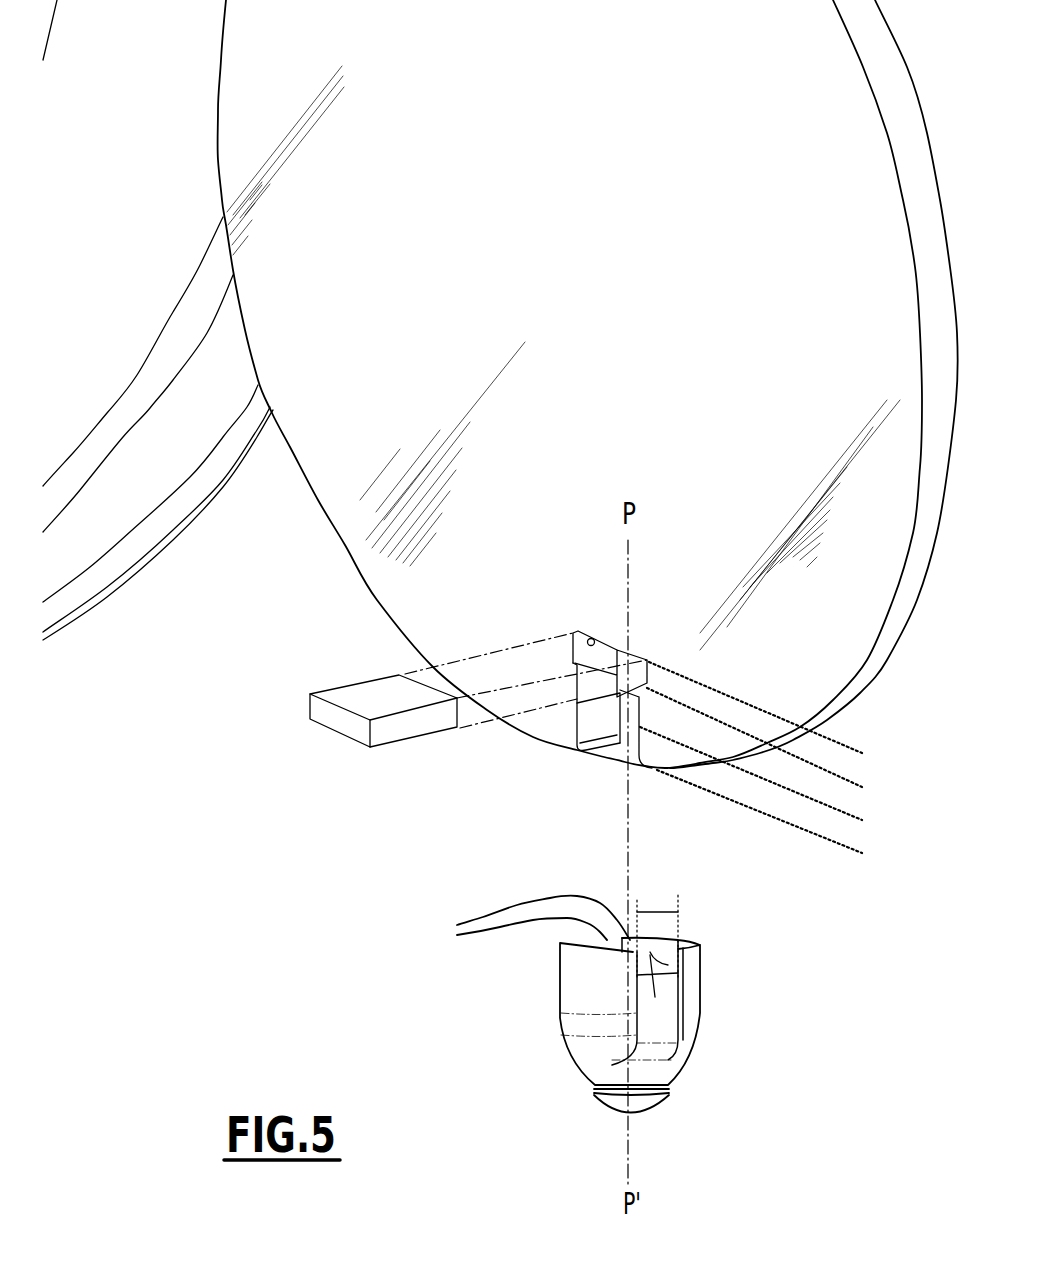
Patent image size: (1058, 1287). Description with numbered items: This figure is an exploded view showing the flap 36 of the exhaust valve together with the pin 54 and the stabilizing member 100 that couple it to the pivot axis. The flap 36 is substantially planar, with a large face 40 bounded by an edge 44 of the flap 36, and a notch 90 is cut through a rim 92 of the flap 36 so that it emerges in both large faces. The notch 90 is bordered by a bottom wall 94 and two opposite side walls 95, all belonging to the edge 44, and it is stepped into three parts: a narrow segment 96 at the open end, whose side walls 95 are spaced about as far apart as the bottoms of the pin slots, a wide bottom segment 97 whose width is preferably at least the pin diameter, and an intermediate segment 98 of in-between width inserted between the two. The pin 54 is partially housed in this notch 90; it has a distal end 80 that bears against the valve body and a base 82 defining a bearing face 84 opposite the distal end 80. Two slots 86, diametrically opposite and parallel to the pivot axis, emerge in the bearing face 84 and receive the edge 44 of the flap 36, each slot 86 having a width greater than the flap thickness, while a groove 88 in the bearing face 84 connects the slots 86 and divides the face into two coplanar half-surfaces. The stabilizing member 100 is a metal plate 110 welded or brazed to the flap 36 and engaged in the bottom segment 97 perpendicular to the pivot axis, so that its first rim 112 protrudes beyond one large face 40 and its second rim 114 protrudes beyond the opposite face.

The flap 36 is at (355, 442).
The large face 40 is at (610, 314).
The edge 44 is at (855, 660).
The pin 54 is at (609, 1013).
The distal end 80 is at (638, 1102).
The base 82 is at (712, 998).
The bearing face 84 is at (690, 935).
The slot 86 is at (523, 918).
The groove 88 is at (697, 955).
The notch 90 is at (580, 710).
The rim 92 is at (568, 750).
The bottom wall 94 is at (594, 638).
The side wall 95 is at (610, 744).
The narrow segment 96 is at (866, 820).
The wide bottom segment 97 is at (866, 753).
The intermediate segment 98 is at (866, 787).
The stabilizing member 100 is at (330, 705).
The plate 110 is at (408, 734).
The first rim 112 is at (333, 722).
The second rim 114 is at (447, 684).